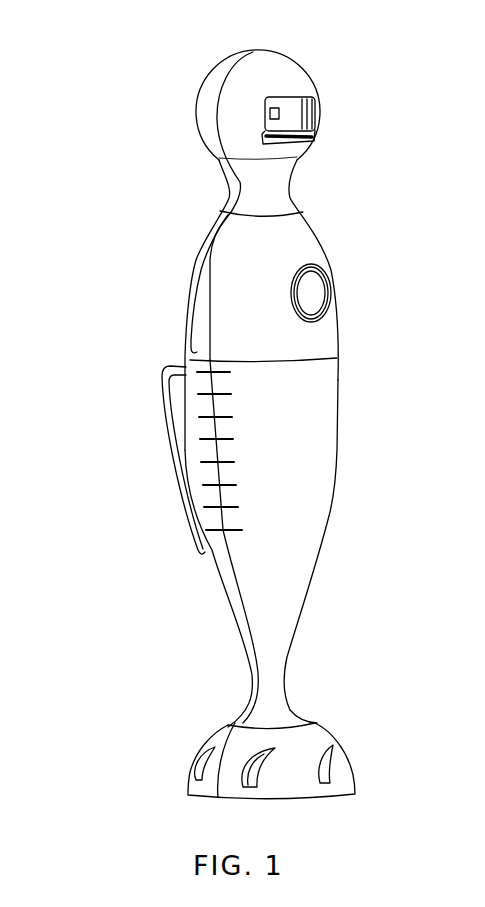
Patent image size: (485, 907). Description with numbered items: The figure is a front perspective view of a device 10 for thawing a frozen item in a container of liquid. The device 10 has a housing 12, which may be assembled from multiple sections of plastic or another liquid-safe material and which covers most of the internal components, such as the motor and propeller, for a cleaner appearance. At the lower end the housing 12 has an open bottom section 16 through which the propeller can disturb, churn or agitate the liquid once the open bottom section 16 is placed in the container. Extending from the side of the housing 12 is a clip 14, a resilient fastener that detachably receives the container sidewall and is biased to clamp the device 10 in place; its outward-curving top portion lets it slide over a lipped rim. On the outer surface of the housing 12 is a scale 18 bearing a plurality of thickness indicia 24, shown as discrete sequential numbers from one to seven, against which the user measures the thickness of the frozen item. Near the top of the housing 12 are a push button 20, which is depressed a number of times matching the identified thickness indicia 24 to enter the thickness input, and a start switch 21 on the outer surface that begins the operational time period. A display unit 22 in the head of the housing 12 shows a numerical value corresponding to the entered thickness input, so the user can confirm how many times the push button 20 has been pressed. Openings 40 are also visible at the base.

The device 10 is at (118, 158).
The housing 12 is at (339, 365).
The clip 14 is at (165, 403).
The open bottom section 16 is at (326, 732).
The scale 18 is at (252, 440).
The push button 20 is at (314, 137).
The start switch 21 is at (313, 291).
The display unit 22 is at (288, 111).
The thickness indicia 24 is at (233, 462).
The slots / openings 40 is at (200, 760).